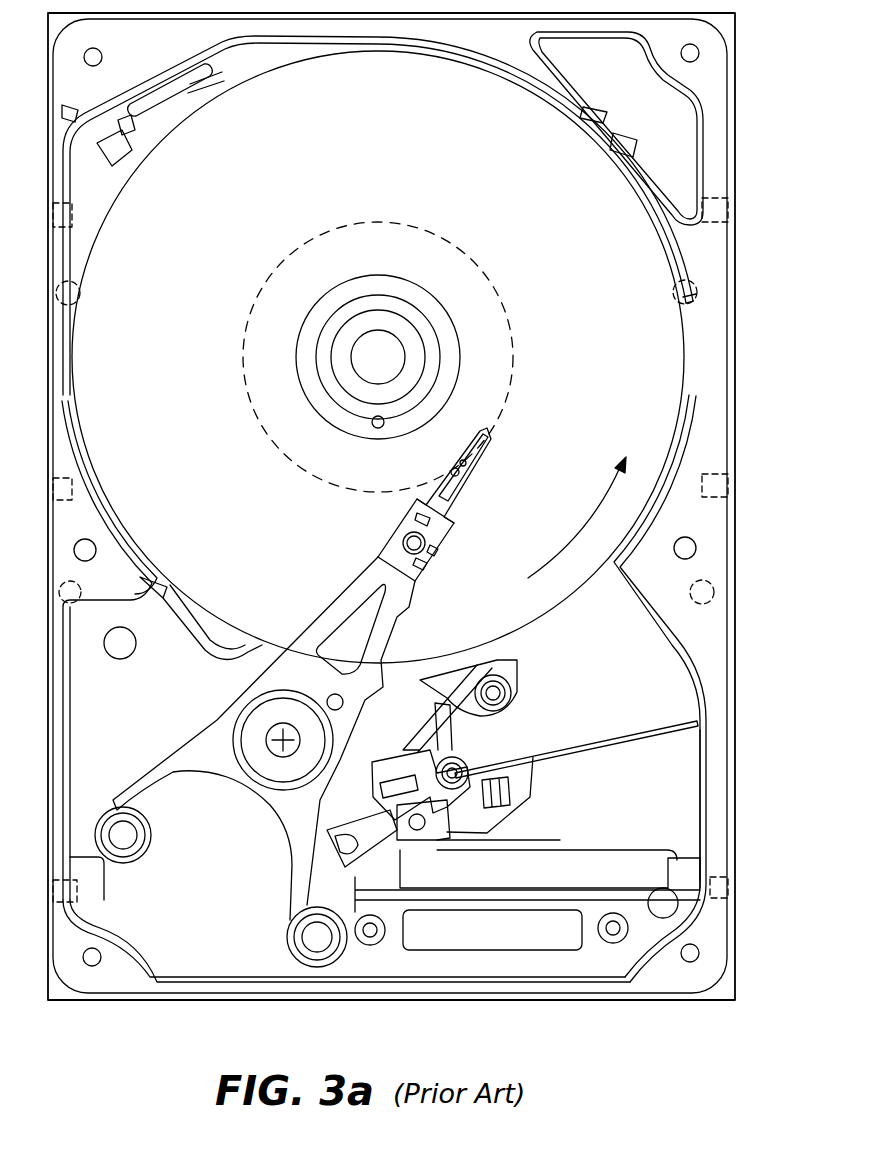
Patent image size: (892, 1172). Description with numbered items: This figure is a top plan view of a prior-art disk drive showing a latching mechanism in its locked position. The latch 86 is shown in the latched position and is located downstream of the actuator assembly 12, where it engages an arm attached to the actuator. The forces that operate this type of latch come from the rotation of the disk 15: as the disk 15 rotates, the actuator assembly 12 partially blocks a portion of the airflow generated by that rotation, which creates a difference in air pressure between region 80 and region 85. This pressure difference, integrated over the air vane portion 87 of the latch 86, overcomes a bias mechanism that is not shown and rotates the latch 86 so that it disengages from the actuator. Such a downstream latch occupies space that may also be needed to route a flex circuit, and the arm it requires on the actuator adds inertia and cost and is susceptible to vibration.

The actuator assembly 12 is at (199, 709).
The disk 15 is at (688, 348).
The region 80 is at (628, 634).
The region 85 is at (645, 806).
The latch 86 is at (470, 765).
The air vane portion 87 is at (598, 740).